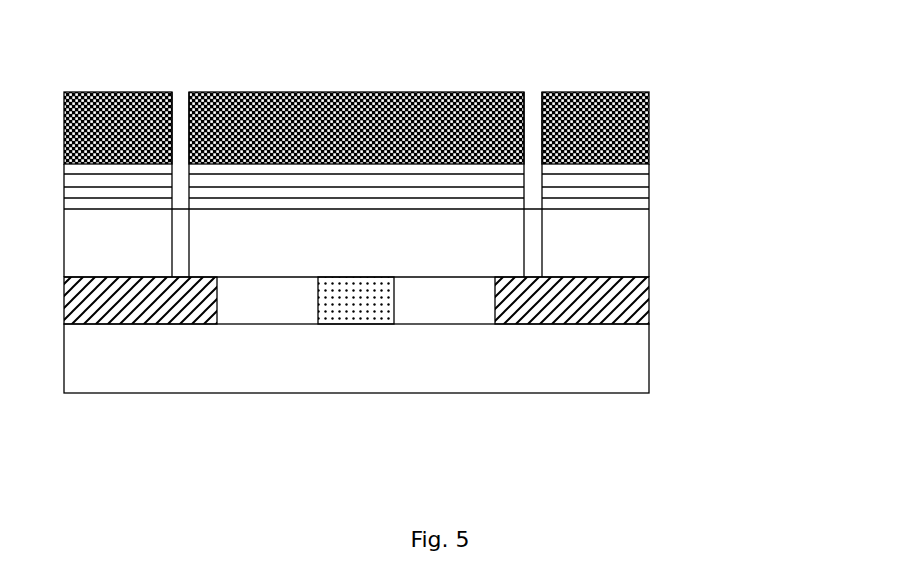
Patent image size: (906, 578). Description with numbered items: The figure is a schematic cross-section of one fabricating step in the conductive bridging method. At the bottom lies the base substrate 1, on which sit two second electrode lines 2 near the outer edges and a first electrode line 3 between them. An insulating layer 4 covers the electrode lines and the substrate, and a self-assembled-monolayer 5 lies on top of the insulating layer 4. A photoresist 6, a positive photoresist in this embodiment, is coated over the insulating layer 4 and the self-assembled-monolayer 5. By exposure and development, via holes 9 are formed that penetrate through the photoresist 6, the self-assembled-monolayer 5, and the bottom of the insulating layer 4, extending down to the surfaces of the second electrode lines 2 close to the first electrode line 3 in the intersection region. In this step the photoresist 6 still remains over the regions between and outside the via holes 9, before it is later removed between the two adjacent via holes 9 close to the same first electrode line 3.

The base substrate 1 is at (649, 357).
The second electrode line 2 is at (649, 302).
The first electrode line 3 is at (356, 300).
The insulating layer 4 is at (649, 245).
The self-assembled-monolayer 5 is at (649, 187).
The photoresist 6 is at (649, 130).
The via hole 9 is at (184, 113).